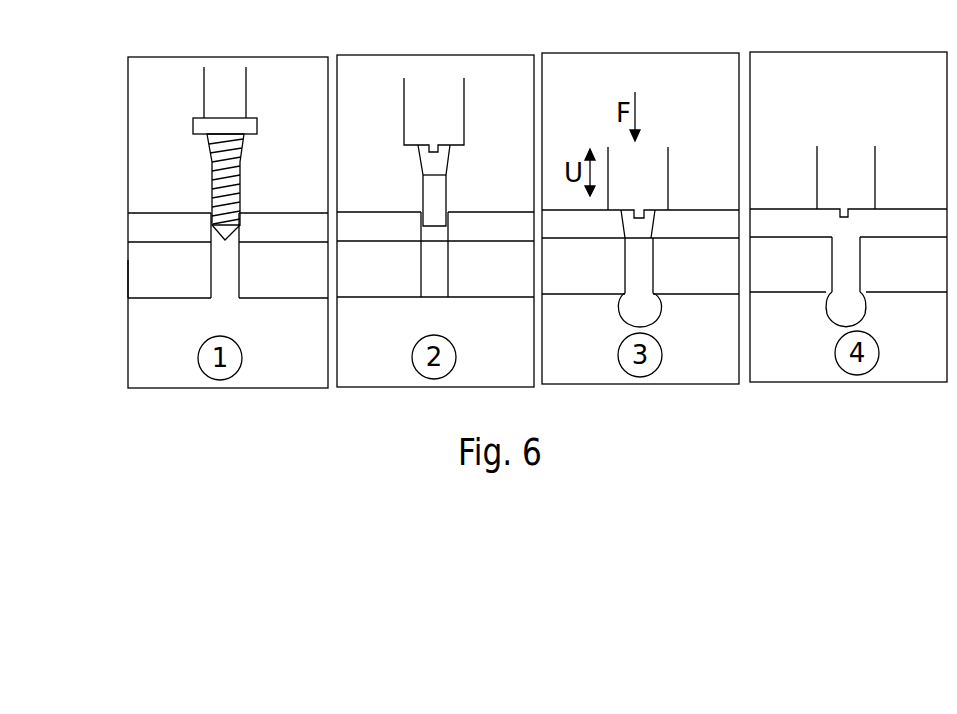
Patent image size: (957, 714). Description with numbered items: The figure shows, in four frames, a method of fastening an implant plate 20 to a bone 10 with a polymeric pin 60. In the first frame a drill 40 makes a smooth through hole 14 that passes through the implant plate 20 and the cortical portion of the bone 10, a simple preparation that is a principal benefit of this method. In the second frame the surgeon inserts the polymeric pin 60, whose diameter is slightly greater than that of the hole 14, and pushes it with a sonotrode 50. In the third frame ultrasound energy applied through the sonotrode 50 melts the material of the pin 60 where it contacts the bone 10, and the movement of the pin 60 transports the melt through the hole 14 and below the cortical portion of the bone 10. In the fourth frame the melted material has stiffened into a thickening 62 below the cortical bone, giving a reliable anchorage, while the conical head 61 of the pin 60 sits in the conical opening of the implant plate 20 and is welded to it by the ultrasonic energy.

The bone 10 is at (140, 278).
The through hole 14 is at (225, 288).
The implant plate 20 is at (140, 232).
The drill 40 is at (218, 98).
The sonotrode 50 is at (412, 97).
The polymeric pin 60 is at (430, 195).
The head 61 is at (853, 229).
The thickening 62 is at (858, 308).